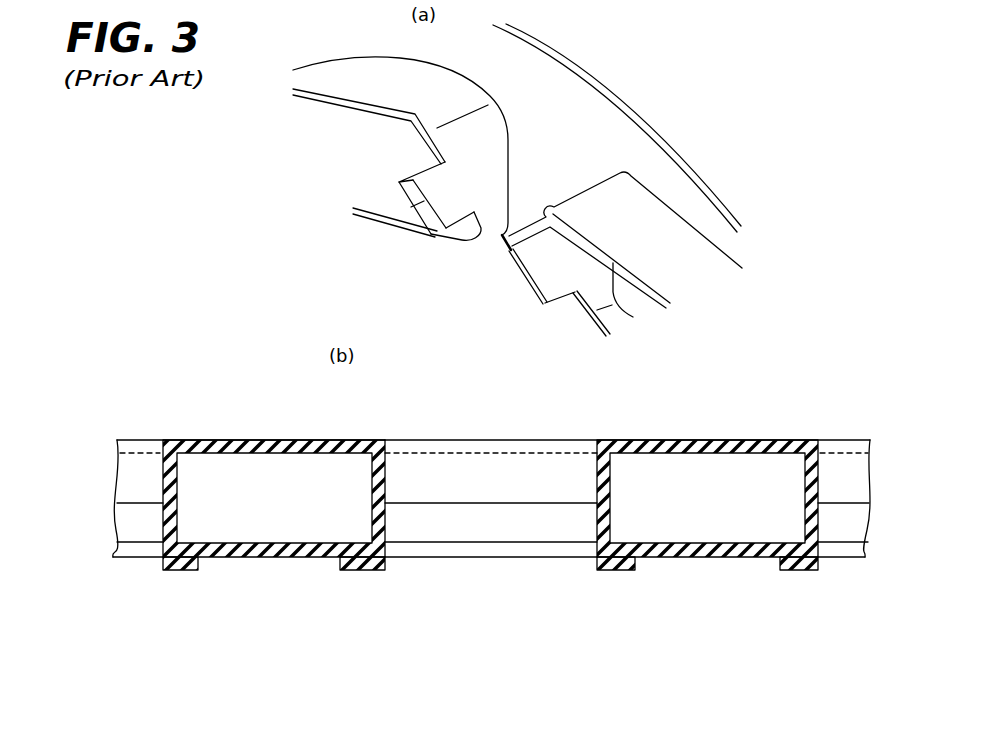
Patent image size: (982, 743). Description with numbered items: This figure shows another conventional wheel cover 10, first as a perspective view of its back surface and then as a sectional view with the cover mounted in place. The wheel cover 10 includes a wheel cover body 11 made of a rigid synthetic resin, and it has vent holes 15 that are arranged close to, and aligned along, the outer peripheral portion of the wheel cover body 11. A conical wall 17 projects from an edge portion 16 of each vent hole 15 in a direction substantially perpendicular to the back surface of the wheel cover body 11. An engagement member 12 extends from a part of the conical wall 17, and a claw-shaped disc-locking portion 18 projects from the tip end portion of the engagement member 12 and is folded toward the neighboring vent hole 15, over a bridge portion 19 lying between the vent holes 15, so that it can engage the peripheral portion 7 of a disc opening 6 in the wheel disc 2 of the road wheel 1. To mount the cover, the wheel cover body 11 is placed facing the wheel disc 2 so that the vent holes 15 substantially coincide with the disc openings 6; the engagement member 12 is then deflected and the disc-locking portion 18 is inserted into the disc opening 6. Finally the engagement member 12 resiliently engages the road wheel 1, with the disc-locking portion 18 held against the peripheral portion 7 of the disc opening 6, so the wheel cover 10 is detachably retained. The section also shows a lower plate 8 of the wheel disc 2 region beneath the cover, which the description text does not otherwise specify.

The road wheel 1 is at (227, 565).
The wheel disc 2 is at (263, 558).
The disc opening 6 is at (470, 550).
The peripheral portion 7 is at (368, 541).
The lower plate of right panel 8 is at (725, 555).
The wheel cover 10 is at (680, 150).
The wheel cover body 11 is at (592, 115).
The engagement member 12 is at (418, 171).
The vent hole 15 is at (350, 132).
The edge portion 16 is at (362, 72).
The conical wall 17 is at (477, 464).
The disc-locking portion 18 is at (413, 212).
The bridge portion 19 is at (732, 438).